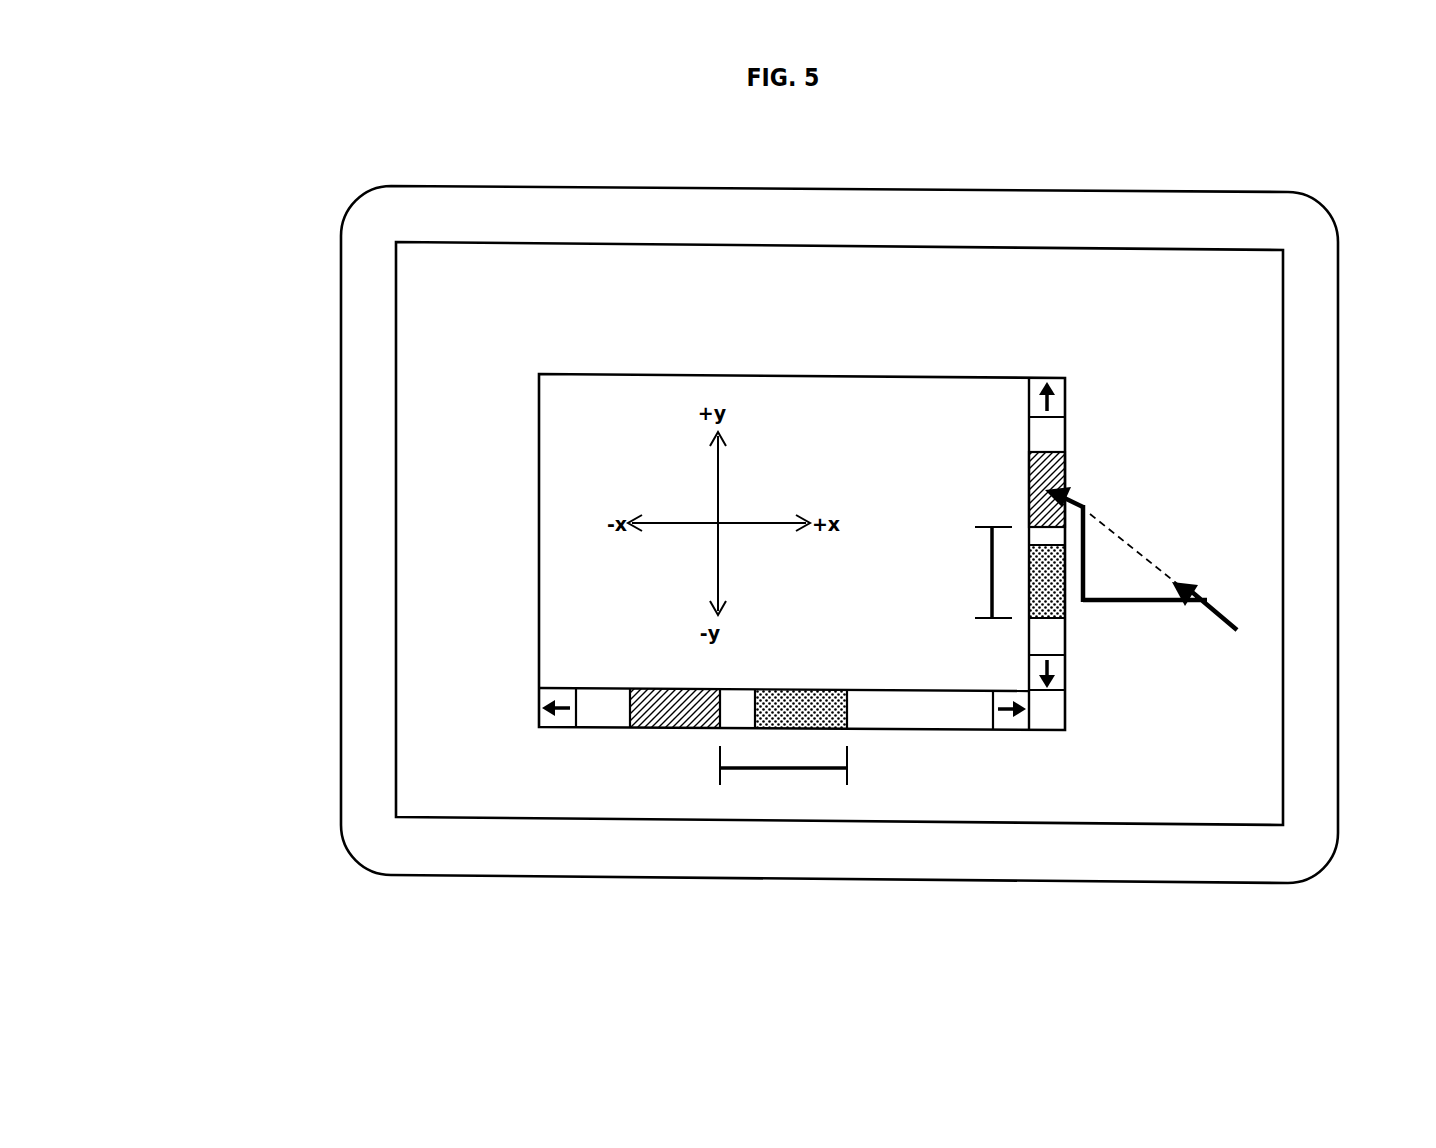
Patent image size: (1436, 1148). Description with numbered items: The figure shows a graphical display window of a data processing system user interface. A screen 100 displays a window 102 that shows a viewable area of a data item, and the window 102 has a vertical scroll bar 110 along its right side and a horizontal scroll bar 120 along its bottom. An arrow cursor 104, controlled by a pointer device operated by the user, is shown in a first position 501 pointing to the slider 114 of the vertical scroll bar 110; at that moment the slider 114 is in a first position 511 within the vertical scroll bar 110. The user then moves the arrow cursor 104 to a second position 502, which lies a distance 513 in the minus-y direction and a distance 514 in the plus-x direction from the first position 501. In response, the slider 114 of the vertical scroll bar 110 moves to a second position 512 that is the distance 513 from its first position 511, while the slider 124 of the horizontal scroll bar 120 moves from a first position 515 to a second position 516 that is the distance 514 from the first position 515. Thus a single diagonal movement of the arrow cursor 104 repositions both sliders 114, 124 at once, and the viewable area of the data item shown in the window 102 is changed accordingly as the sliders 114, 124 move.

The screen 100 is at (396, 298).
The window 102 is at (539, 446).
The arrow cursor 104 is at (1086, 502).
The vertical scroll bar 110 is at (1067, 431).
The slider 114 is at (1067, 464).
The horizontal scroll bar 120 is at (563, 728).
The slider 124 is at (647, 727).
The first position 501 is at (1085, 510).
The second position 502 is at (1203, 604).
The first position 511 is at (1028, 480).
The second position 512 is at (1048, 600).
The distance 513 is at (991, 580).
The distance 514 is at (797, 768).
The first position 515 is at (668, 707).
The second position 516 is at (828, 710).